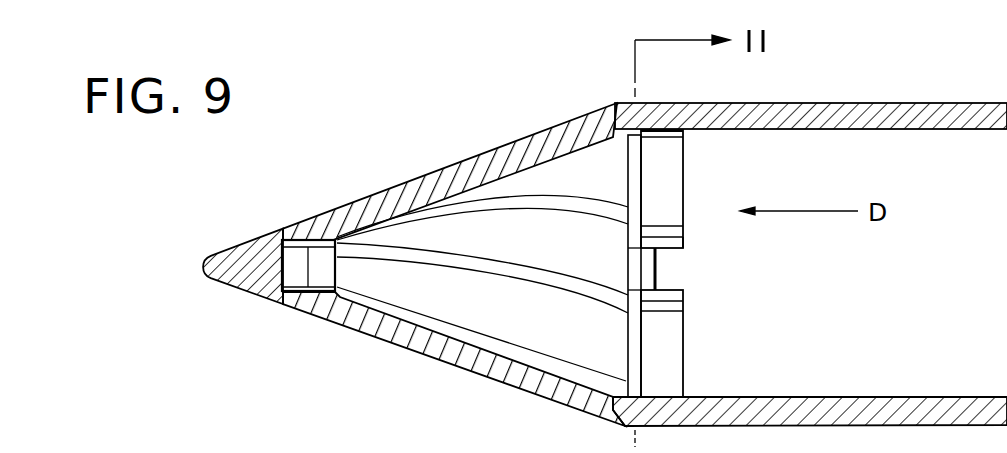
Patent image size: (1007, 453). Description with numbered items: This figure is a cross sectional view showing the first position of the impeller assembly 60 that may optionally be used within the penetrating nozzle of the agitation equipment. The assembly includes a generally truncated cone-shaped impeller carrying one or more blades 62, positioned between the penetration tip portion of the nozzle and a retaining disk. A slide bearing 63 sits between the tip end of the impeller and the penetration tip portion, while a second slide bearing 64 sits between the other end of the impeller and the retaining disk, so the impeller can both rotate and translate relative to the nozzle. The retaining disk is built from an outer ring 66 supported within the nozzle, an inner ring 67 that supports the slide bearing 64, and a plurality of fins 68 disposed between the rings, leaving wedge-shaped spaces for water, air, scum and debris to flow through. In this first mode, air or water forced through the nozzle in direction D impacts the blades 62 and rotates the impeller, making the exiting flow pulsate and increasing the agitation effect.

The impeller assembly 60 is at (447, 184).
The blades 62 is at (454, 338).
The slide bearing 63 is at (310, 222).
The slide bearing 64 is at (695, 242).
The outer ring 66 is at (658, 132).
The inner ring 67 is at (674, 231).
The fins 68 is at (672, 158).